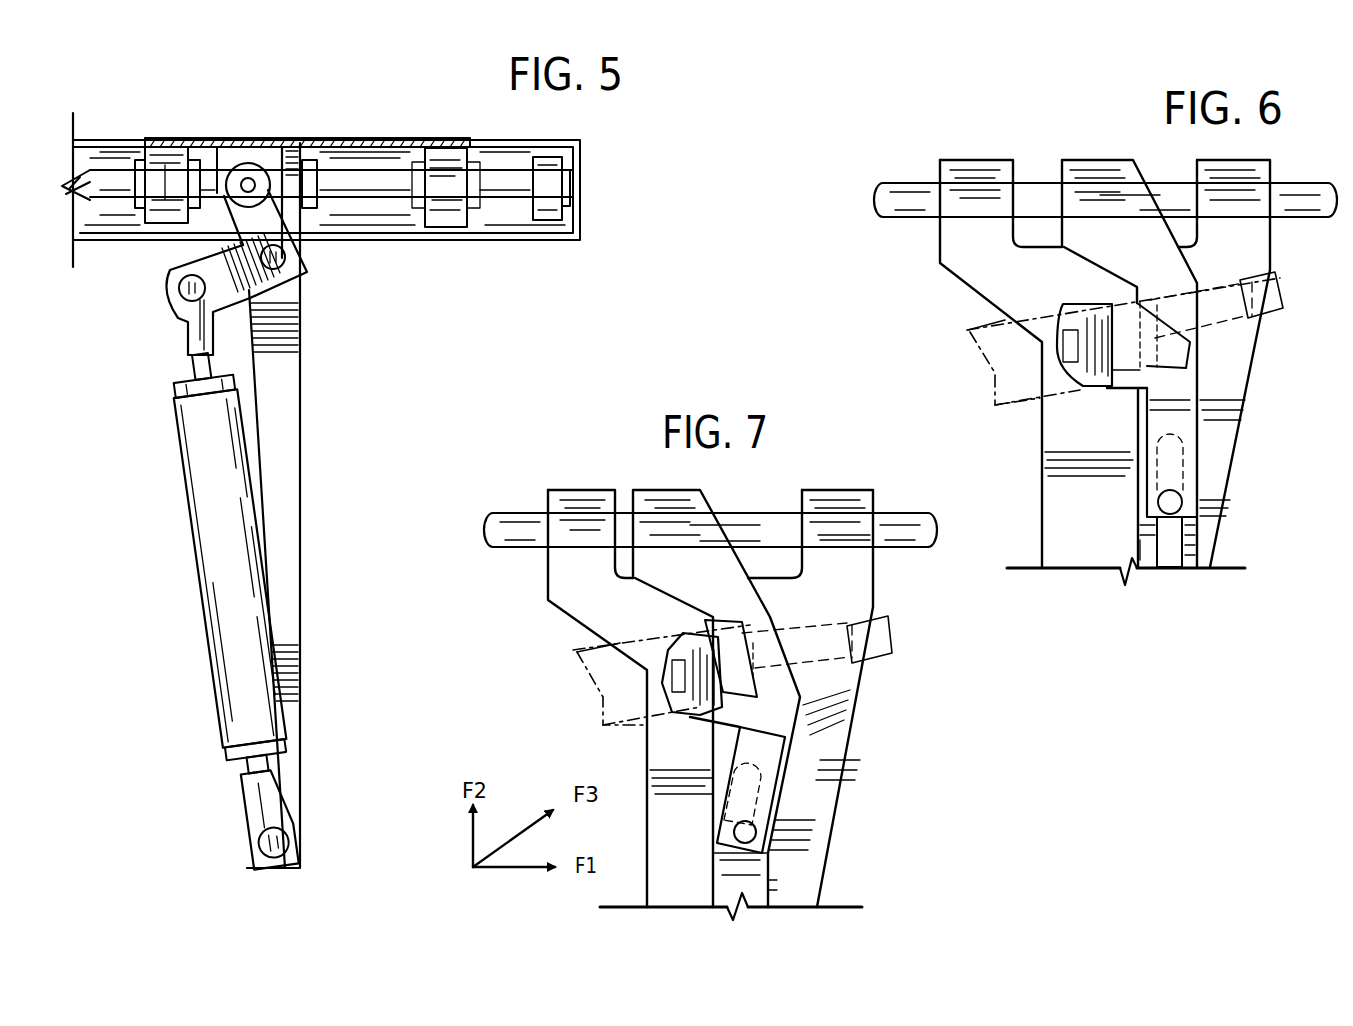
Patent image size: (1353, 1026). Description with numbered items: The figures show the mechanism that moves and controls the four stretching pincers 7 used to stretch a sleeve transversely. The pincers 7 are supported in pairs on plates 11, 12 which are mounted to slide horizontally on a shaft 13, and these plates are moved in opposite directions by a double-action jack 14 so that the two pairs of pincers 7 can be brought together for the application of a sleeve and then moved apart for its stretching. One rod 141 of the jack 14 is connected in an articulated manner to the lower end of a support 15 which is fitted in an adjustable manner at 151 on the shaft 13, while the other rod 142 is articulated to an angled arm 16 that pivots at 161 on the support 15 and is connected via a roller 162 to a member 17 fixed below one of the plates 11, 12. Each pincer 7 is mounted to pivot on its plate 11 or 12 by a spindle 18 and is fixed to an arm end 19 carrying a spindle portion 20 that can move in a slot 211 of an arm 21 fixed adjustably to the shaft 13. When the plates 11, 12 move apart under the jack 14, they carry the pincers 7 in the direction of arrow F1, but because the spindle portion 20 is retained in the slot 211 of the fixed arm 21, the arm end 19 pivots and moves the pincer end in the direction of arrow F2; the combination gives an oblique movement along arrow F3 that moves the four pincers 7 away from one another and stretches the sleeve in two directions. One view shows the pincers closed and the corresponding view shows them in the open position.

In FIG. 5, the plate 11 is at (380, 140).
In FIG. 7, the plate 11 is at (761, 675).
In FIG. 6, the plate 11 is at (1105, 342).
In FIG. 5, the plate 12 is at (326, 168).
In FIG. 7, the plate 12 is at (761, 675).
In FIG. 6, the plate 12 is at (1105, 342).
In FIG. 5, the shaft 13 is at (511, 175).
In FIG. 7, the shaft 13 is at (521, 522).
In FIG. 6, the shaft 13 is at (917, 192).
In FIG. 5, the jack 14 is at (207, 515).
In FIG. 5, the rod of the jack 141 is at (260, 810).
In FIG. 5, the rod of the jack 142 is at (190, 332).
In FIG. 5, the support 15 is at (290, 428).
In FIG. 5, the adjustable fitting 151 is at (312, 170).
In FIG. 5, the angled arm 16 is at (256, 296).
In FIG. 5, the pivot 161 is at (304, 256).
In FIG. 5, the roller 162 is at (254, 165).
In FIG. 5, the member 17 is at (226, 150).
In FIG. 7, the spindle 18 is at (667, 690).
In FIG. 6, the spindle 18 is at (1060, 372).
In FIG. 7, the arm end 19 is at (787, 763).
In FIG. 6, the arm end 19 is at (1180, 416).
In FIG. 7, the spindle portion 20 is at (752, 830).
In FIG. 6, the spindle portion 20 is at (1172, 502).
In FIG. 7, the arm 21 is at (655, 497).
In FIG. 6, the arm 21 is at (1085, 172).
In FIG. 7, the slot 211 is at (745, 870).
In FIG. 6, the slot 211 is at (1168, 538).
In FIG. 7, the stretching pincers 7 is at (560, 708).
In FIG. 6, the stretching pincers 7 is at (958, 350).